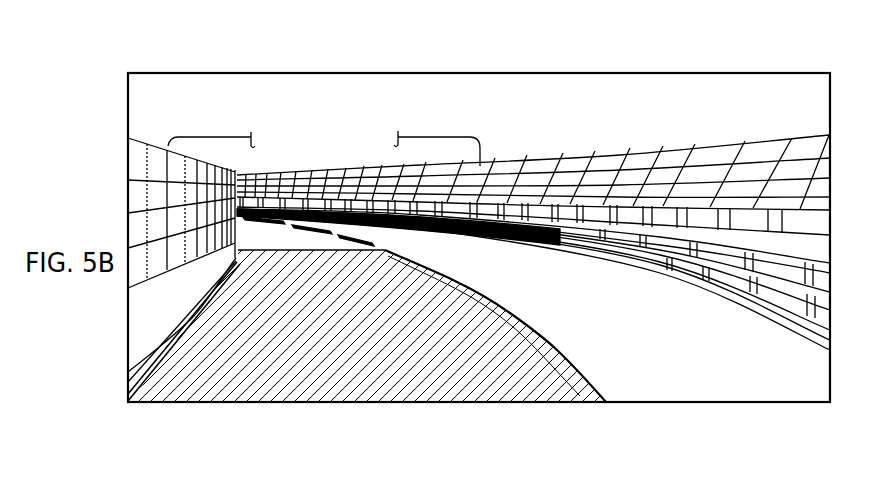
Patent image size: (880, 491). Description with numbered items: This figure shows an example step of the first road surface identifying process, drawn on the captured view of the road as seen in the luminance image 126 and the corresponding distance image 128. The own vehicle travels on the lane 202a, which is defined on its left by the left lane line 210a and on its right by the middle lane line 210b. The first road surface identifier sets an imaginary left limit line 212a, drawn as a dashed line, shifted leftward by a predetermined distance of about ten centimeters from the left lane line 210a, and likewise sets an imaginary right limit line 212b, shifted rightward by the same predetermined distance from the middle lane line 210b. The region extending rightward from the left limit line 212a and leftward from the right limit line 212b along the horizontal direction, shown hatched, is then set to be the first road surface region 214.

The luminance image 126 is at (772, 55).
The distance image 128 is at (486, 215).
The lane 202a is at (383, 355).
The left lane line 210a is at (128, 403).
The middle lane line 210b is at (570, 352).
The imaginary left limit line 212a is at (180, 329).
The imaginary right limit line 212b is at (544, 326).
The first road surface region 214 is at (388, 371).